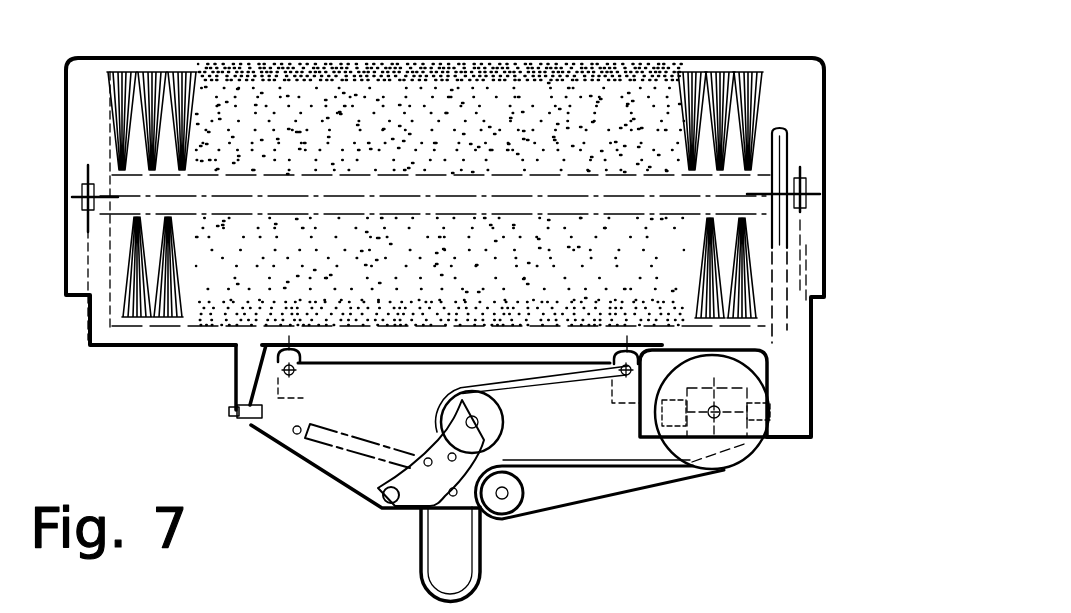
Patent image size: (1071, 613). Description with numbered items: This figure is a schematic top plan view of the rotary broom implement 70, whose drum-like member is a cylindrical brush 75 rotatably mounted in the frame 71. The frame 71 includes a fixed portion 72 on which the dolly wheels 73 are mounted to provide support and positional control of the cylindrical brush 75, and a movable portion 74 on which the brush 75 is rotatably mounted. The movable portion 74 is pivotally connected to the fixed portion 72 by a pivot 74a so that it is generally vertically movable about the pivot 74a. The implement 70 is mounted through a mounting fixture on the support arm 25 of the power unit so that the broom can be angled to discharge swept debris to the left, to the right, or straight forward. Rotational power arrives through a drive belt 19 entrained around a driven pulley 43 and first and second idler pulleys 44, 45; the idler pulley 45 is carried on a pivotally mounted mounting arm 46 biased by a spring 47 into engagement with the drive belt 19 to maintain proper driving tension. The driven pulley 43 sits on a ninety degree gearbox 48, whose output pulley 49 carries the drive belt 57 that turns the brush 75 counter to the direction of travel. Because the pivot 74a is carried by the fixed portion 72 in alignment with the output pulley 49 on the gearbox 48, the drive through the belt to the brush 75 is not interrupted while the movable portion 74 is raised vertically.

The rotary broom implement 70 is at (813, 39).
The cylindrical brush 75 is at (112, 87).
The drive belt 57 is at (787, 331).
The movable portion 74 is at (235, 352).
The pivot 74a is at (230, 411).
The frame 71 is at (270, 447).
The fixed portion 72 is at (352, 490).
The dolly wheels 73 is at (305, 393).
The second idler pulley 45 is at (498, 424).
The spring 47 is at (328, 447).
The mounting arm 46 is at (410, 503).
The first idler pulley 44 is at (508, 497).
The drive belt 19 is at (588, 478).
The driven pulley 43 is at (724, 466).
The gearbox 48 is at (745, 425).
The output pulley 49 is at (775, 393).
The support arm 25 is at (529, 609).